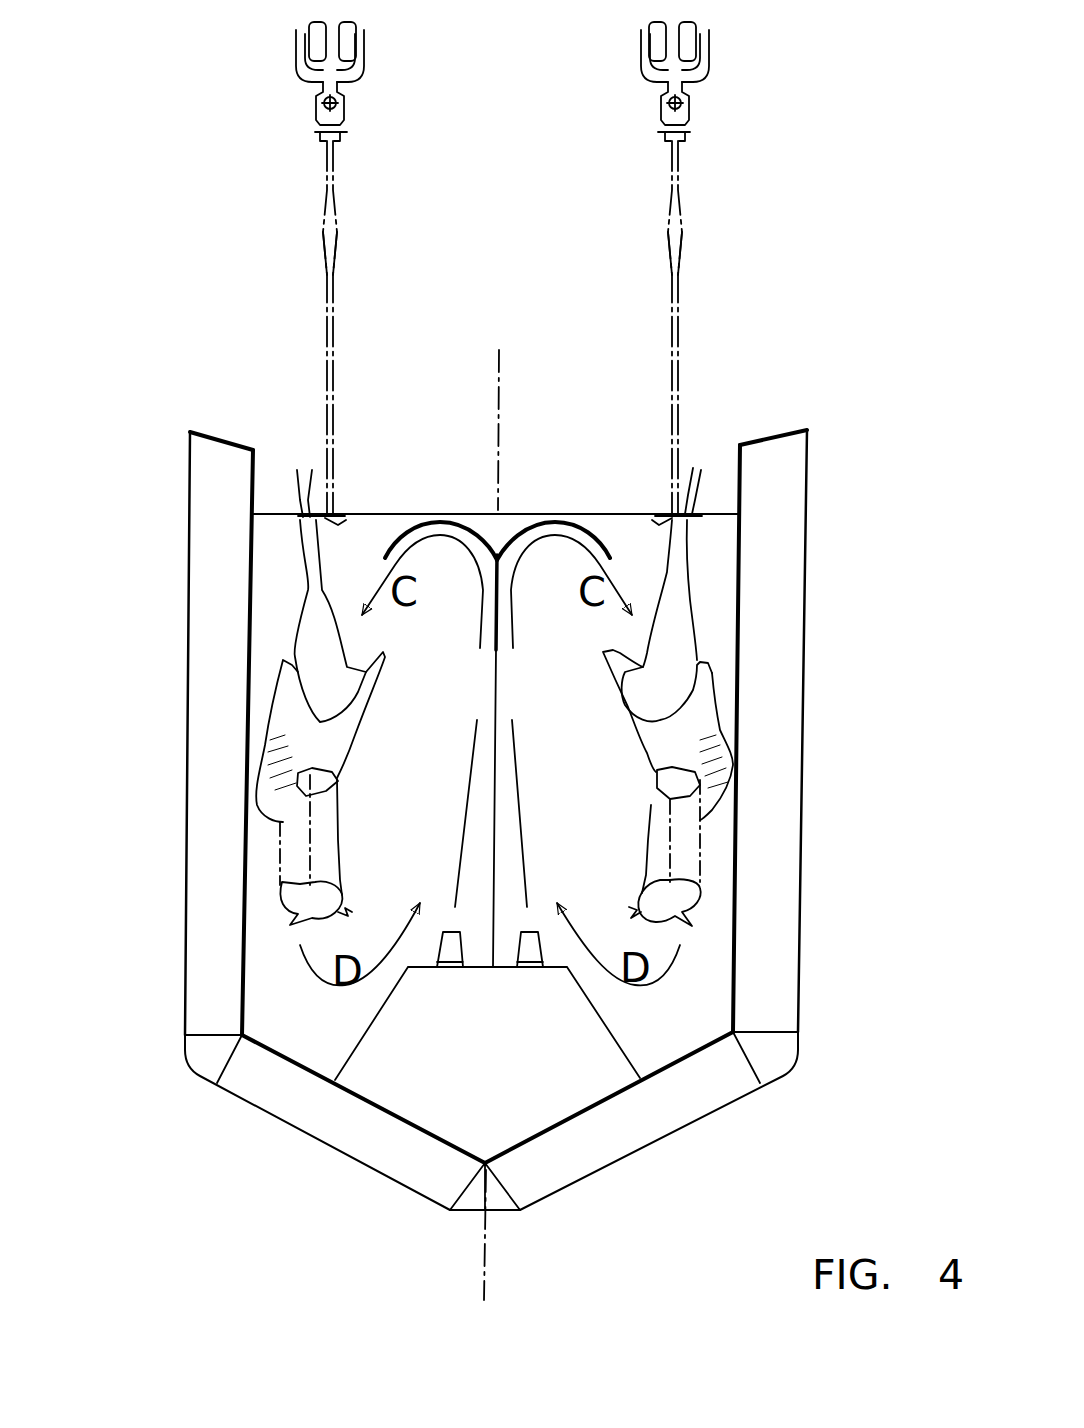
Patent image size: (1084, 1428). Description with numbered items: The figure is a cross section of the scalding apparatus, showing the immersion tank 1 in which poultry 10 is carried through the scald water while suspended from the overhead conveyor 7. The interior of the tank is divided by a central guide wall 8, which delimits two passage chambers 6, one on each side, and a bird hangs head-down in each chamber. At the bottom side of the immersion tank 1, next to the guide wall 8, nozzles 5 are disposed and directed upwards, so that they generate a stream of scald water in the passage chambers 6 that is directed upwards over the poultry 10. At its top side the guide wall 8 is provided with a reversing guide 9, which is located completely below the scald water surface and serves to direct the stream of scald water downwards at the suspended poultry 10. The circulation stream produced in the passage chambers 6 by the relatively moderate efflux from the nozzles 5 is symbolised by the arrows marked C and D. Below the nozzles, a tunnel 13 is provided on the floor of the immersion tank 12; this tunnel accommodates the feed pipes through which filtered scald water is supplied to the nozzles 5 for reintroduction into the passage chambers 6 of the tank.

The immersion tank 1 is at (544, 847).
The nozzles 5 is at (525, 972).
The passage chambers 6 is at (404, 812).
The overhead conveyor 7 is at (352, 125).
The guide wall 8 is at (499, 700).
The reversing guide 9 is at (430, 513).
The poultry 10 is at (295, 718).
The immersion tank 12 is at (400, 1123).
The tunnel 13 is at (503, 1148).